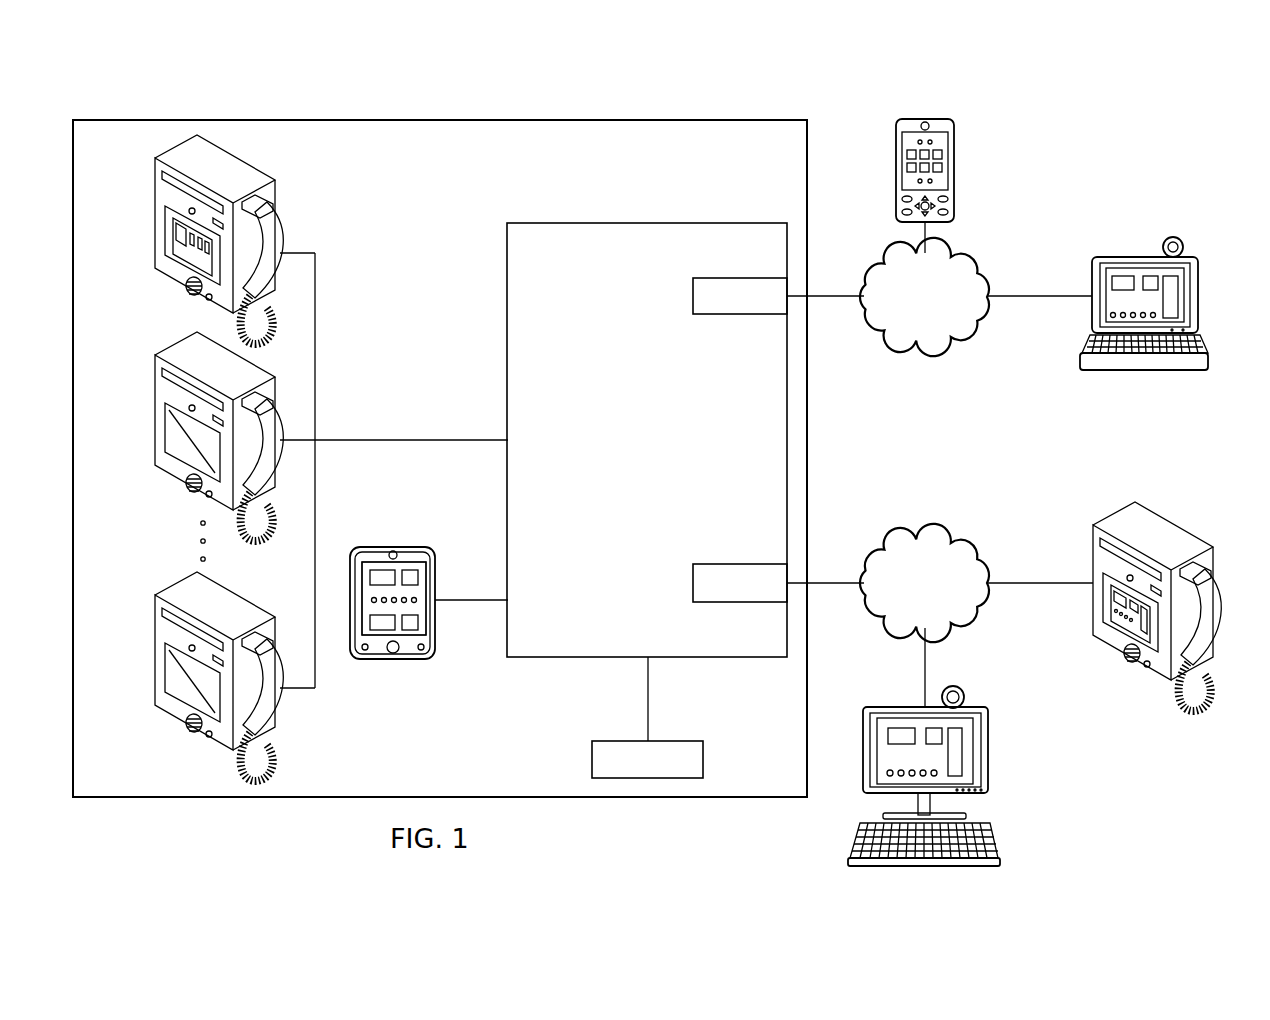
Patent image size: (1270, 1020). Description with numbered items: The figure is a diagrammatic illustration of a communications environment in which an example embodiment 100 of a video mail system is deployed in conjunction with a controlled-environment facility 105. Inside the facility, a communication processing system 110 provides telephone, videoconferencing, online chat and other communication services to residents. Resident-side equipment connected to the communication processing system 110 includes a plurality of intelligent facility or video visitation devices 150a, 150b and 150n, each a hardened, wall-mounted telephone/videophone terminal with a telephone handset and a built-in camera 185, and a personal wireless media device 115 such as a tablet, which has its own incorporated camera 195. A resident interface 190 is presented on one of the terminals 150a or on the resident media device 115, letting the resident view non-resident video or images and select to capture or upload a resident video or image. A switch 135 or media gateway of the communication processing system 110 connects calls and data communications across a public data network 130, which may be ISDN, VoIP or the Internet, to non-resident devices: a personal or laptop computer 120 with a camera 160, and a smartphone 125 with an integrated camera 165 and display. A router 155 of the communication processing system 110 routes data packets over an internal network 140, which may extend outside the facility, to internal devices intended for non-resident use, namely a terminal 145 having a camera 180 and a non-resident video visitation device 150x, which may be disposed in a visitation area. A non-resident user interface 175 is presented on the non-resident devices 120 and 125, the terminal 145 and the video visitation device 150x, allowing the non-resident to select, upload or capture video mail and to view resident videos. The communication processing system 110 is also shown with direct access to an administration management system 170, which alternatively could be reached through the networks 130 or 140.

The example embodiment / controlled-environment facility communications system 100 is at (1198, 174).
The controlled-environment facility 105 is at (686, 151).
The communication processing system 110 is at (629, 507).
The personal wireless media device 115 is at (392, 662).
The personal computer 120 is at (1198, 285).
The smartphone 125 is at (954, 162).
The public data network 130 is at (870, 268).
The switch 135 is at (740, 277).
The internal network 140 is at (952, 543).
The terminal 145 is at (989, 752).
The video visitation device 150a is at (152, 195).
The video visitation device 150b is at (152, 391).
The video visitation device 150n is at (152, 668).
The non-resident video visitation device 150x is at (1126, 667).
The router 155 is at (741, 603).
The camera 160 is at (1172, 236).
The camera 165 is at (930, 126).
The Administration Management System (AMS) 170 is at (591, 760).
The user interface 175 is at (940, 182).
The camera 180 is at (964, 698).
The camera 185 is at (194, 207).
The resident interface 190 is at (172, 238).
The camera 195 is at (393, 550).